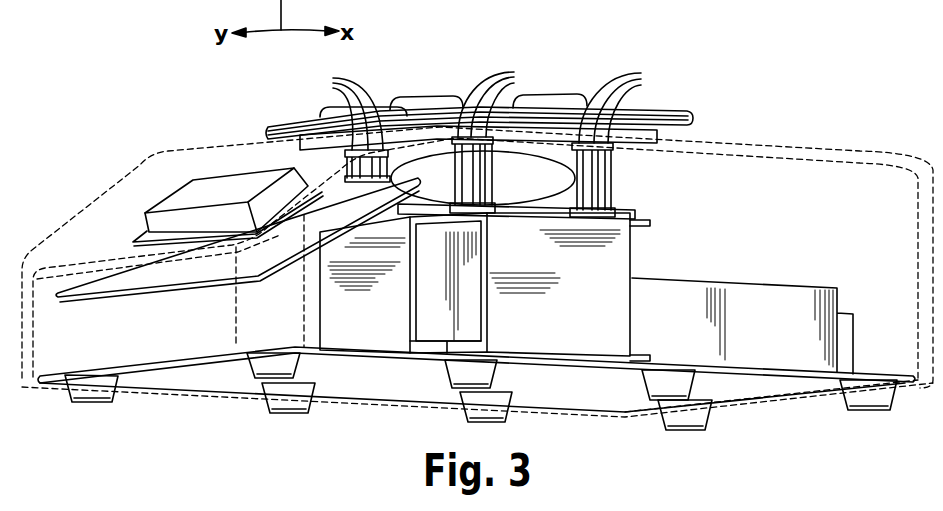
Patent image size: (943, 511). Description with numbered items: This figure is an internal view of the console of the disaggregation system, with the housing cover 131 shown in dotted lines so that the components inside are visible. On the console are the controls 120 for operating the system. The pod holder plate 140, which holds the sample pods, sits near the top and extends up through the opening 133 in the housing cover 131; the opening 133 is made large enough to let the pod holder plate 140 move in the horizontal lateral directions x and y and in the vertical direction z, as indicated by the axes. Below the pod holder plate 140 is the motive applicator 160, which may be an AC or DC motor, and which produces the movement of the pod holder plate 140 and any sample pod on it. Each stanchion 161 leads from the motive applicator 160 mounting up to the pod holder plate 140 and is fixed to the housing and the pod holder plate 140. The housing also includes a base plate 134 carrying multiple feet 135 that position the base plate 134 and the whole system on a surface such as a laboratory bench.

The controls 120 is at (187, 183).
The housing cover 131 is at (836, 150).
The opening 133 is at (294, 161).
The base plate 134 is at (202, 373).
The feet 135 is at (698, 417).
The pod holder plate 140 is at (673, 116).
The motive applicator 160 is at (632, 252).
The stanchion 161 is at (486, 104).